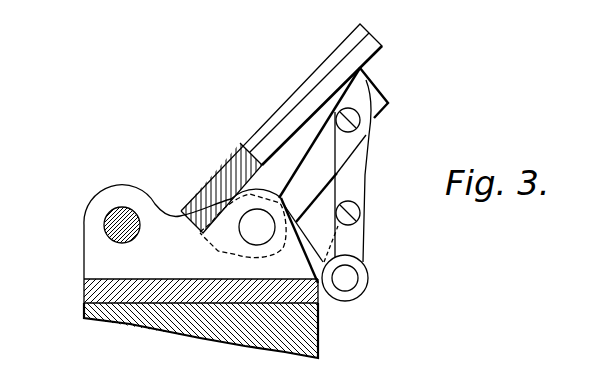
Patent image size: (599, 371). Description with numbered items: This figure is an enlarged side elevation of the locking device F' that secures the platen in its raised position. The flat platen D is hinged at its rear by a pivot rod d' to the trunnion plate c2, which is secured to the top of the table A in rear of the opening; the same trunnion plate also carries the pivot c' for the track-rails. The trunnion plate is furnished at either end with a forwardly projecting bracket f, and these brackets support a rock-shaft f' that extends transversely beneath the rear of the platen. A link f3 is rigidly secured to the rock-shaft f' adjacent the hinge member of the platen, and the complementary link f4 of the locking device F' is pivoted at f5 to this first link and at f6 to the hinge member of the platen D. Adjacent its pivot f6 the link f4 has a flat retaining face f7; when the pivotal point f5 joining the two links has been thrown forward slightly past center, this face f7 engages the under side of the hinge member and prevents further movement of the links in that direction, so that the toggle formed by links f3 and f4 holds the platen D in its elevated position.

The table A is at (293, 338).
The trunnion plate c2 is at (97, 290).
The track-rail pivot c' is at (176, 244).
The pivot rod d' is at (244, 232).
The flat platen D is at (283, 135).
The flat retaining face f7 is at (367, 82).
The pivot of link to hinge member f6 is at (372, 114).
The locking device F' is at (374, 171).
The complementary link f4 is at (352, 162).
The pivot between links f5 is at (358, 205).
The forwardly projecting bracket f is at (339, 154).
The rigidly secured link f3 is at (313, 243).
The rock-shaft f' is at (360, 278).